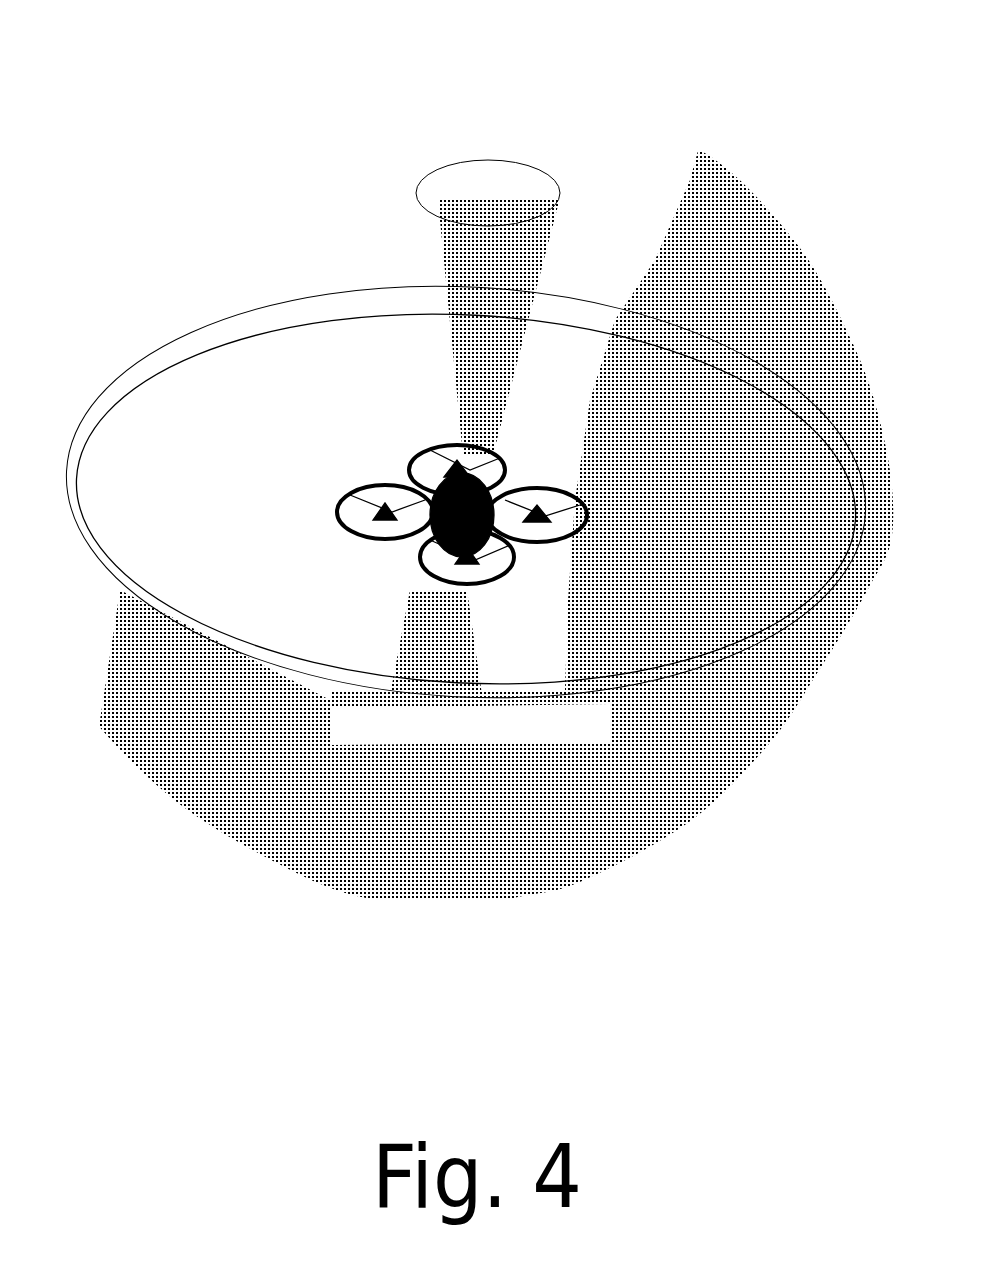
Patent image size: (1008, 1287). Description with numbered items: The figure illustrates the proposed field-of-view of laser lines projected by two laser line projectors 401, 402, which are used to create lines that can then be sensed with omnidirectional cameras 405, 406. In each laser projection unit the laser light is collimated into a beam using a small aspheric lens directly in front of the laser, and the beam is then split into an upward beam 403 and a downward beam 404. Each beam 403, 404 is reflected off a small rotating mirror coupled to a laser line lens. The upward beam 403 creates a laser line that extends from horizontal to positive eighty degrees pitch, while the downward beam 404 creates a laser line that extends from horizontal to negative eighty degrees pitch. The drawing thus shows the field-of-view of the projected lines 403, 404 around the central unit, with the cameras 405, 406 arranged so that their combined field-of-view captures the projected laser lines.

The laser line projector 401 is at (509, 482).
The laser line projector 402 is at (421, 559).
The upward beam 403 is at (458, 171).
The downward beam 404 is at (475, 839).
The camera 405 is at (218, 213).
The camera 406 is at (117, 785).